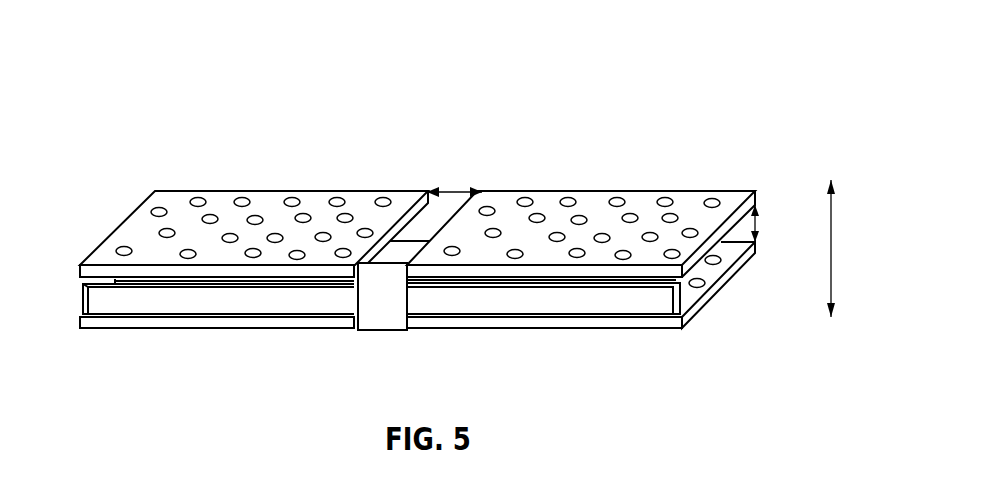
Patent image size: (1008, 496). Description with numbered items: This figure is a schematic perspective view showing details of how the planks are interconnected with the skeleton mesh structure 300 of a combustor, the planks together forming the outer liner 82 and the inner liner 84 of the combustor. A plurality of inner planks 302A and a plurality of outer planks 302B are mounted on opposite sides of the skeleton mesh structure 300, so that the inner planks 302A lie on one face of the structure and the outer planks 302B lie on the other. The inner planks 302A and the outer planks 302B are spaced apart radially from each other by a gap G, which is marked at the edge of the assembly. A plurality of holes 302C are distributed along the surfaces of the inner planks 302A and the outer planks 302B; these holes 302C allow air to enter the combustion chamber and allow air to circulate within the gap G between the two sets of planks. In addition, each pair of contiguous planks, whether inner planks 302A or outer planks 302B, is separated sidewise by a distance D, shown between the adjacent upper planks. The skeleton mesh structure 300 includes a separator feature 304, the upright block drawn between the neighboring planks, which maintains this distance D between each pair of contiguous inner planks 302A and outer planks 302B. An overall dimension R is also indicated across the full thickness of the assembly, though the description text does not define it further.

The outer liner 82 is at (488, 210).
The inner liner 84 is at (709, 48).
The skeleton mesh structure 300 is at (622, 303).
The inner planks 302A is at (200, 322).
The outer planks 302B is at (310, 208).
The holes 302C is at (578, 213).
The separator feature 304 is at (375, 322).
The distance D is at (453, 190).
The gap G is at (760, 223).
The overall thickness R is at (832, 248).